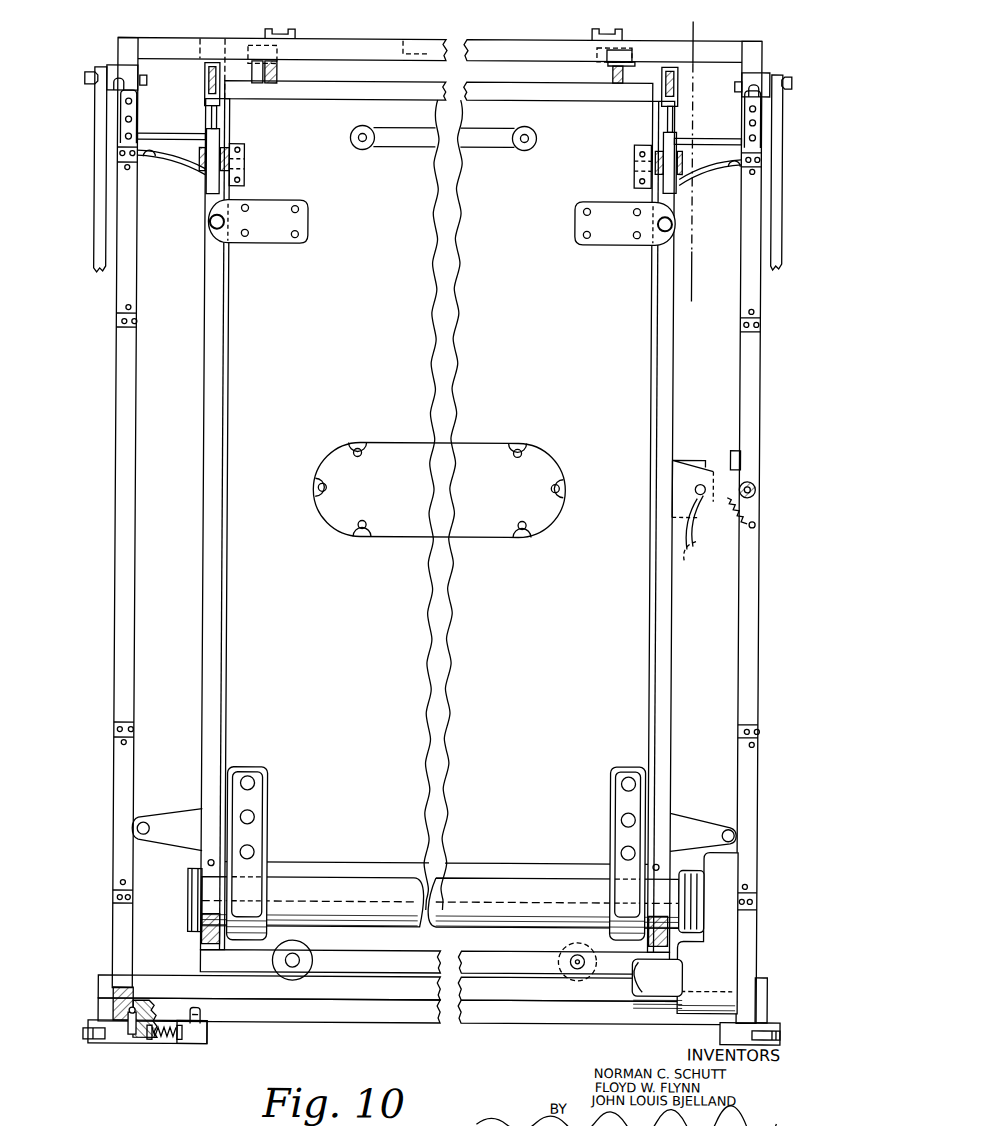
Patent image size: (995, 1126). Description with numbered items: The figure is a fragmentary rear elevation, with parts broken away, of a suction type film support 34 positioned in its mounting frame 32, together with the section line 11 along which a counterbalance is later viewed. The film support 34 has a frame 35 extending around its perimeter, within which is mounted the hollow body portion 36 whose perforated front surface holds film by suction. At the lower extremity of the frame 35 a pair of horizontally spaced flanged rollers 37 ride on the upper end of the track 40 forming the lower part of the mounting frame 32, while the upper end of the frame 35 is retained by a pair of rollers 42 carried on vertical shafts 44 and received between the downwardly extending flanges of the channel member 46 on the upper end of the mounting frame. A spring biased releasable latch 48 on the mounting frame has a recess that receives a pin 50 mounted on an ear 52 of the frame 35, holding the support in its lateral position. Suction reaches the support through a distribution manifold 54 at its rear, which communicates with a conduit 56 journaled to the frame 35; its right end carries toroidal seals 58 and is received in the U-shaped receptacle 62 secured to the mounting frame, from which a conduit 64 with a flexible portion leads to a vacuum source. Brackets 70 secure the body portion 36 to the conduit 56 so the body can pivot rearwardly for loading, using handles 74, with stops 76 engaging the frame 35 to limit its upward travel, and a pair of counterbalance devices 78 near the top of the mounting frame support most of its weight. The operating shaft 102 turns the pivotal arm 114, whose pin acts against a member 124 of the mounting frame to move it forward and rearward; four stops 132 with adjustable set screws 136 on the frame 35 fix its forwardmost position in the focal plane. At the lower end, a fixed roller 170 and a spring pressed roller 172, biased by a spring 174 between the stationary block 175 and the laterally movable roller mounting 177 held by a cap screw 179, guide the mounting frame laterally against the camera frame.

The section line 11- 11 is at (700, 27).
The mounting frame 32 is at (433, 535).
The film support 34 is at (445, 583).
The frame 35 is at (201, 604).
The body portion 36 is at (484, 618).
The rollers 37 is at (312, 950).
The track 40 is at (366, 990).
The rollers 42 is at (277, 62).
The vertical shafts 44 is at (272, 70).
The channel member 46 is at (401, 46).
The releasable latch 48 is at (718, 472).
The pin 50 is at (690, 532).
The ear 52 is at (683, 560).
The distribution manifold 54 is at (472, 467).
The conduit 56 is at (492, 888).
The toroidal seals 58 is at (701, 888).
The U-shaped receptacle 62 is at (721, 936).
The conduit 64 is at (657, 1008).
The brackets 70 is at (249, 833).
The handles 74 is at (399, 149).
The stops 76 is at (260, 233).
The counterbalance devices 78 is at (205, 112).
The operating shaft 102 is at (90, 86).
The pivotal arm 114 is at (93, 232).
The member 124 is at (131, 270).
The stops 132 is at (185, 167).
The set screws 136 is at (147, 160).
The roller 170 is at (784, 1036).
The roller 172 is at (87, 1040).
The spring 174 is at (170, 1043).
The stationary block 175 is at (212, 1042).
The roller mounting 177 is at (146, 1045).
The cap screw 179 is at (130, 1044).